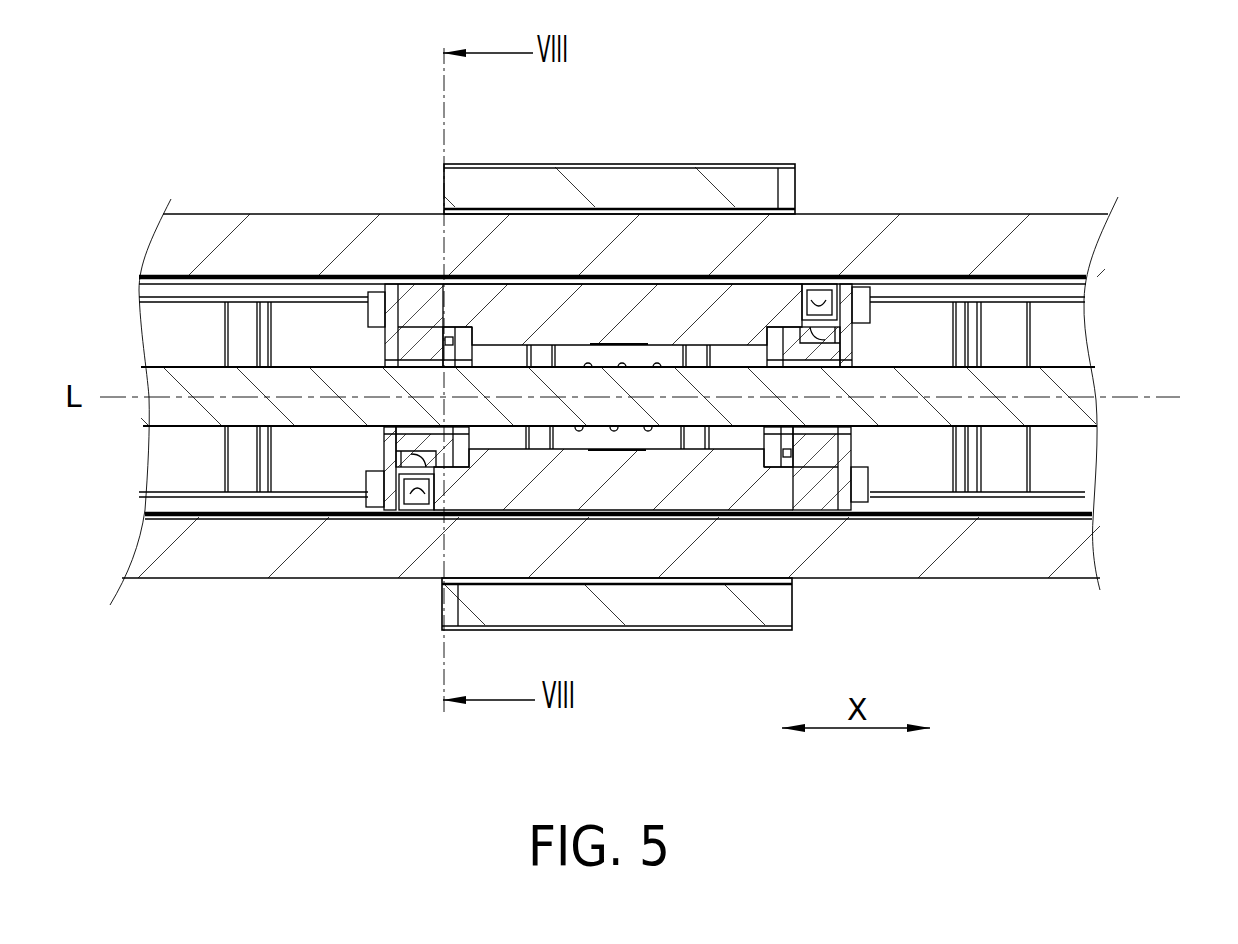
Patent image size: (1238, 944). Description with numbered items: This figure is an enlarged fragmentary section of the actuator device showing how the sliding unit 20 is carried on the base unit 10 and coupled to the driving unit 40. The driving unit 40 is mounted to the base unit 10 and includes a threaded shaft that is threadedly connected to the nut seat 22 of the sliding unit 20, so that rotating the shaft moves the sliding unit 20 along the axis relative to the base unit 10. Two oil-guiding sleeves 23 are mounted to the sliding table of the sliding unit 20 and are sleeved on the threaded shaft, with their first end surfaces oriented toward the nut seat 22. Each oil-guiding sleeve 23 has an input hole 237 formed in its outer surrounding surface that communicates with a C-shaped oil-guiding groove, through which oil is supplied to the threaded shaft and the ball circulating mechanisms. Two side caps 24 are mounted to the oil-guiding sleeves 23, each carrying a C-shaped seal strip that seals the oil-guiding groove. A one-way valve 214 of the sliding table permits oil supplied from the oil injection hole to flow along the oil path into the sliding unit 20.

The base unit 10 is at (1049, 200).
The sliding unit 20 is at (584, 222).
The nut seat 22 is at (654, 355).
The oil-guiding sleeves 23 is at (417, 337).
The side caps 24 is at (463, 338).
The one-way valve 214 is at (818, 287).
The input hole 237 is at (838, 330).
The driving unit 40 is at (1066, 350).